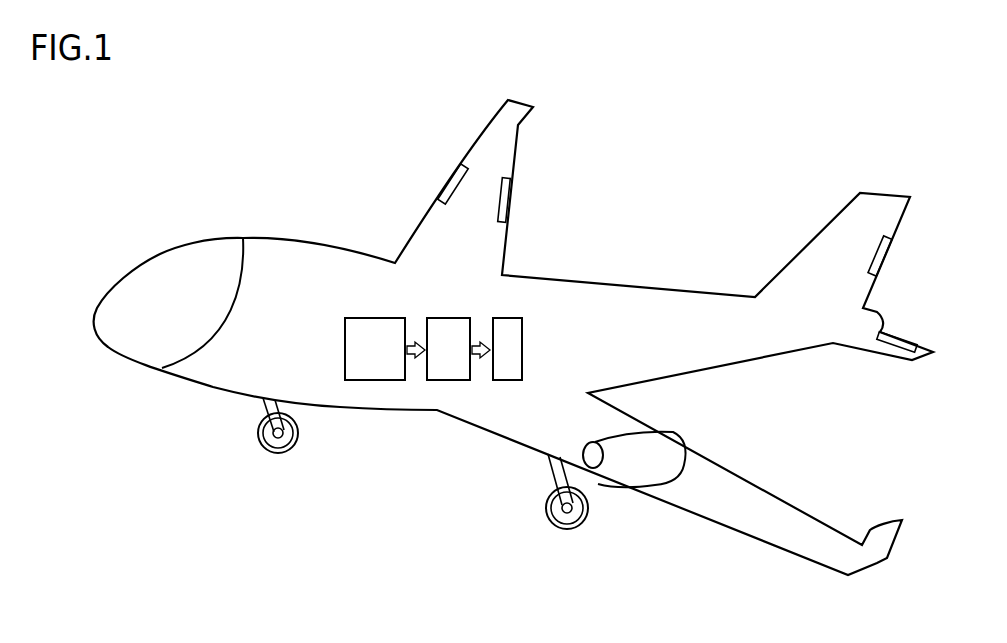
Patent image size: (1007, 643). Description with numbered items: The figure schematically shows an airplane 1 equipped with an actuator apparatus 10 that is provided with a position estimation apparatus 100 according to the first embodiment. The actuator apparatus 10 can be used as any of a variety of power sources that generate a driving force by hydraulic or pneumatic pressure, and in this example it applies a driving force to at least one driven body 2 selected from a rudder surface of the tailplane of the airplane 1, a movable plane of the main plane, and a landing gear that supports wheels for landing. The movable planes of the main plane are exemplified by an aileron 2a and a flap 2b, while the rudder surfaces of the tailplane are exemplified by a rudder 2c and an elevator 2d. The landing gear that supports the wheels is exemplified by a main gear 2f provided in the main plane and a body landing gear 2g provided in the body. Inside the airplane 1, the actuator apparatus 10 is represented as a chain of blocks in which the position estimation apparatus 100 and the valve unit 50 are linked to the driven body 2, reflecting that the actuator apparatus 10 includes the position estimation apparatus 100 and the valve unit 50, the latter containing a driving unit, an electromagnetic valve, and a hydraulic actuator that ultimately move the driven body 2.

The airplane 1 is at (712, 278).
The driven body 2 is at (510, 380).
The aileron 2a is at (512, 198).
The flap 2b is at (452, 182).
The rudder 2c is at (882, 257).
The elevator 2d is at (898, 333).
The main gear 2f is at (552, 473).
The body landing gear 2g is at (262, 402).
The actuator apparatus 10 is at (417, 394).
The valve unit 50 is at (448, 380).
The position estimation apparatus 100 is at (375, 380).